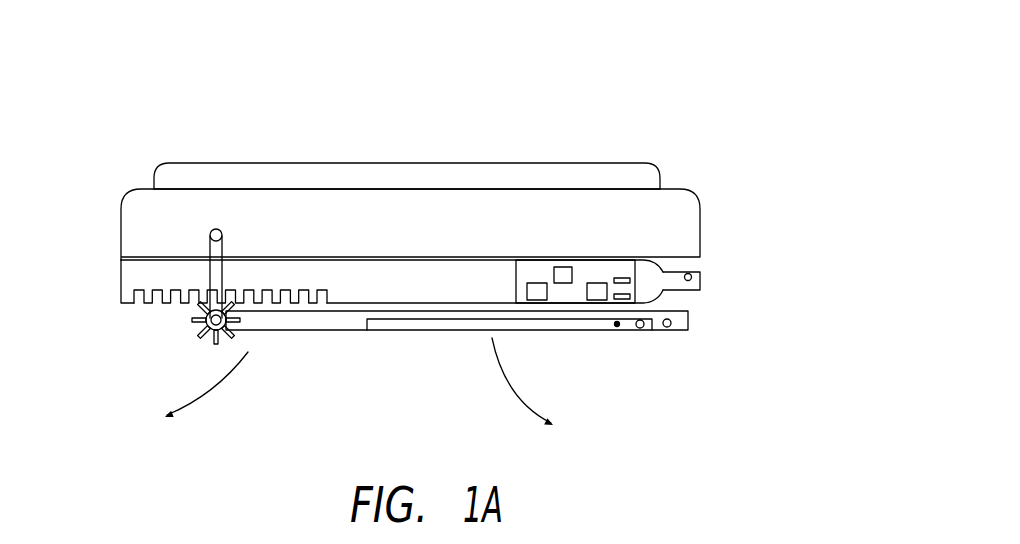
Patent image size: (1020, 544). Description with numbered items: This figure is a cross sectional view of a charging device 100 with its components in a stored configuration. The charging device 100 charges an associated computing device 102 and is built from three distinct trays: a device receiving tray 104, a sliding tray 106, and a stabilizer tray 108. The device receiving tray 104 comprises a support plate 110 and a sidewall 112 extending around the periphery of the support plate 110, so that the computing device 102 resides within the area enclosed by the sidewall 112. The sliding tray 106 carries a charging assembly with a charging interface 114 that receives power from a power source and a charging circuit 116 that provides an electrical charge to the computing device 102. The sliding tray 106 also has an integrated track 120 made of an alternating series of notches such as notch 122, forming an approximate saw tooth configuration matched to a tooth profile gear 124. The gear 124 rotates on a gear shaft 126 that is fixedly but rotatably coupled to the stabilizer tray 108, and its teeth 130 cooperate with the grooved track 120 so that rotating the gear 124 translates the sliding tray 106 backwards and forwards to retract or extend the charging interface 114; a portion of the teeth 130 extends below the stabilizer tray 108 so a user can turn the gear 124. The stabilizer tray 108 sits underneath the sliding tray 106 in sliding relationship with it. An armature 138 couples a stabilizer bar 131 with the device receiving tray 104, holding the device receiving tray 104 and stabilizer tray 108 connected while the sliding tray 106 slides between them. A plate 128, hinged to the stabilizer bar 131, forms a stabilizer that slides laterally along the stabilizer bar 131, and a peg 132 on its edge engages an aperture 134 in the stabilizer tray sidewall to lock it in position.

The charging device 100 is at (176, 75).
The computing device 102 is at (620, 163).
The device receiving tray 104 is at (695, 196).
The sliding tray 106 is at (128, 268).
The stabilizer tray 108 is at (293, 331).
The support plate 110 is at (146, 184).
The sidewall 112 is at (618, 233).
The charging interface 114 is at (776, 282).
The charging circuit 116 is at (583, 302).
The track 120 is at (141, 321).
The notch 122 is at (133, 297).
The gear 124 is at (230, 308).
The gear shaft 126 is at (183, 304).
The plate 128 is at (393, 331).
The teeth 130 is at (214, 336).
The stabilizer bar 131 is at (641, 329).
The peg 132 is at (617, 328).
The aperture 134 is at (670, 327).
The armature 138 is at (222, 235).